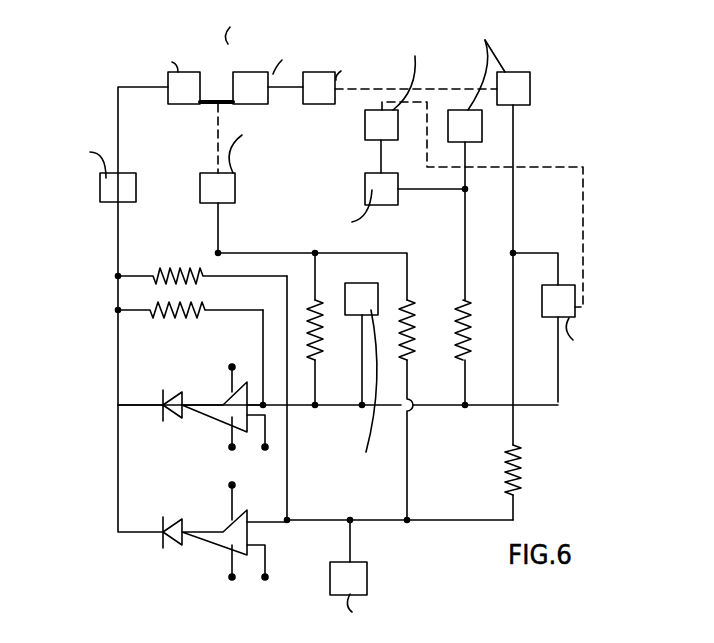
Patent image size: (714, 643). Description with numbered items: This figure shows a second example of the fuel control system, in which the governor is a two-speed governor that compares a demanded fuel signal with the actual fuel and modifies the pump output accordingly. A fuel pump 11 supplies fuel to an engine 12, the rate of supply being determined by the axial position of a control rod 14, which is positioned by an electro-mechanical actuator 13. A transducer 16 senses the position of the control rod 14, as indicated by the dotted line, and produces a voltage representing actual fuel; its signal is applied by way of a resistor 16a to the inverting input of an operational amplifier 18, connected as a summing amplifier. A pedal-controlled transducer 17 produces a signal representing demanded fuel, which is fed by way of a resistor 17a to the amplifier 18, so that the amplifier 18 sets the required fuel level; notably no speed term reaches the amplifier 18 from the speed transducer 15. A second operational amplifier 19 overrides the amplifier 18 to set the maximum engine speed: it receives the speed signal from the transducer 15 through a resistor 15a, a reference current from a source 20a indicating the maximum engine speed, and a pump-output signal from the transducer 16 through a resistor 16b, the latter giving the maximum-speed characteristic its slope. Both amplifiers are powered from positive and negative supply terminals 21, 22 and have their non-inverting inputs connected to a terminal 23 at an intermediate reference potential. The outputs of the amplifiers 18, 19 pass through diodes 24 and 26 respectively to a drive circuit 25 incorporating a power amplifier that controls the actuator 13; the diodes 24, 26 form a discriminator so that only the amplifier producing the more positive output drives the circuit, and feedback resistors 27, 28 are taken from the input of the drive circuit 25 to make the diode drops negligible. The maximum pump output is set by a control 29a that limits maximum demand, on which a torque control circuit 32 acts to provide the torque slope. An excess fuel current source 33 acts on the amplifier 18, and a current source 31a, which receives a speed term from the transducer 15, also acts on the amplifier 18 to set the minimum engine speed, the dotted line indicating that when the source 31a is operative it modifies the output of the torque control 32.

The fuel pump 11 is at (262, 81).
The engine 12 is at (318, 84).
The electro-mechanical actuator 13 is at (181, 80).
The control rod 14 is at (213, 98).
The transducer 15 is at (517, 88).
The resistor 15a is at (520, 466).
The transducer 16 is at (230, 189).
The resistor 16a is at (318, 306).
The resistor 16b is at (412, 310).
The transducer 17 is at (466, 110).
The resistor 17a is at (470, 346).
The operational amplifier 18 is at (224, 419).
The operational amplifier 19 is at (222, 545).
The reference source 20a is at (356, 575).
The positive supply terminal 21 is at (231, 364).
The negative supply terminal 22 is at (234, 449).
The reference potential terminal 23 is at (270, 447).
The diode 24 is at (176, 419).
The drive circuit 25 is at (118, 196).
The diode 26 is at (178, 523).
The feedback resistor 27 is at (169, 312).
The feedback resistor 28 is at (173, 278).
The maximum pump output control 29a is at (376, 192).
The current source 31a is at (566, 301).
The torque control circuit 32 is at (378, 126).
The current source 33 is at (355, 302).